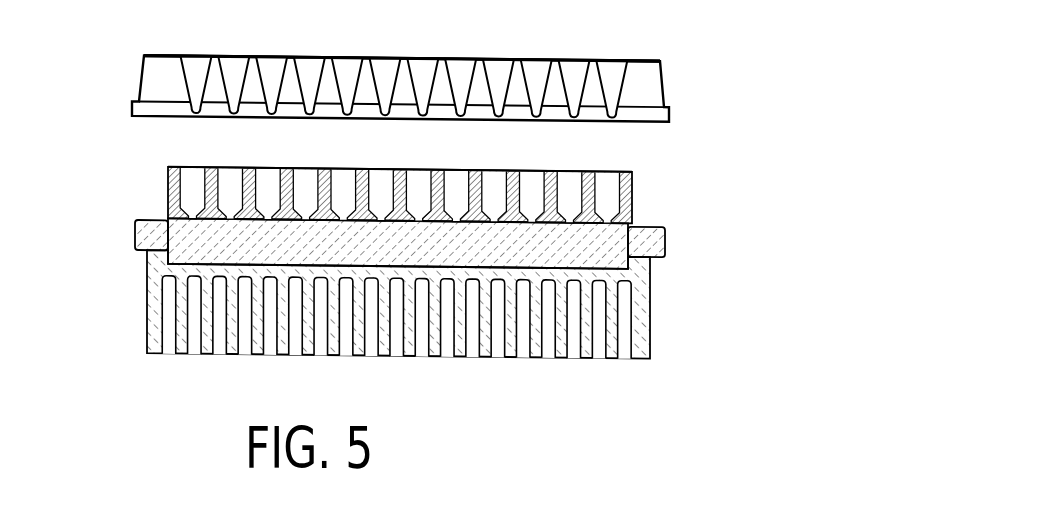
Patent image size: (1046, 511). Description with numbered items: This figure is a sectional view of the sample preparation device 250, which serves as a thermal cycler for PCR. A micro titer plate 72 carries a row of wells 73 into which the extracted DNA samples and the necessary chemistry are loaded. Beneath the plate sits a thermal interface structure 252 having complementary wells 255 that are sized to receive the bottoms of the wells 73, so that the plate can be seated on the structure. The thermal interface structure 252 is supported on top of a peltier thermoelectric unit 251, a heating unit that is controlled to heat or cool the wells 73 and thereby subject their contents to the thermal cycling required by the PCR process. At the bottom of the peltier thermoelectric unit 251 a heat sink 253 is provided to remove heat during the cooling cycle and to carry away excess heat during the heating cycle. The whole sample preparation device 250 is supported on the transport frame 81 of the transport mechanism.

The micro titer plate 72 is at (665, 84).
The wells 73 is at (182, 80).
The transport frame 81 is at (146, 237).
The sample preparation device 250 is at (451, 247).
The peltier thermoelectric unit 251 is at (605, 253).
The thermal interface structure 252 is at (417, 174).
The heat sink 253 is at (648, 342).
The complementary wells 255 is at (188, 186).